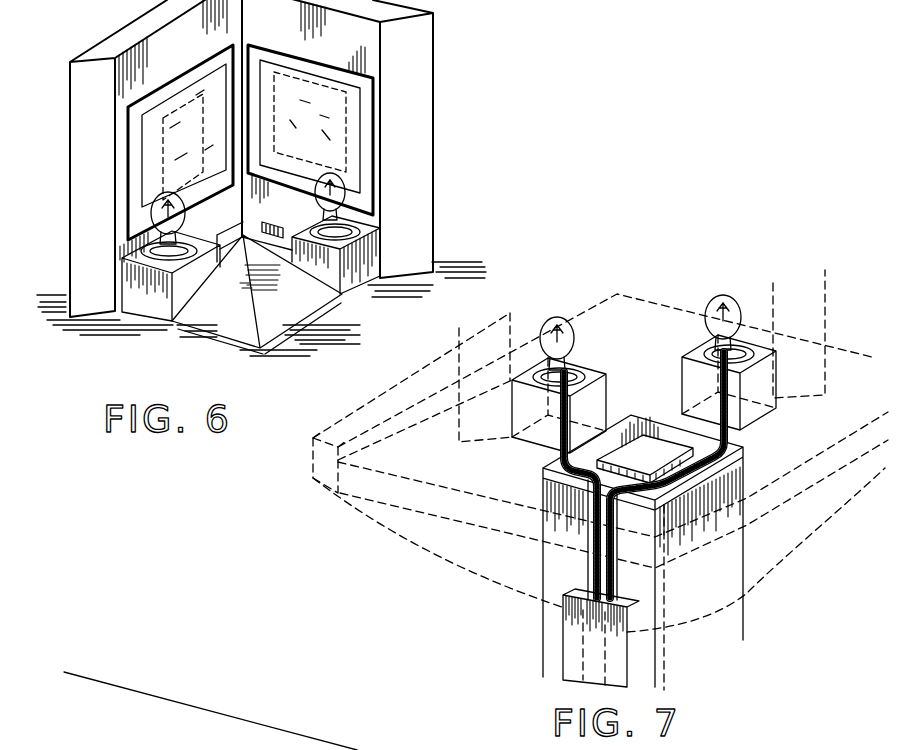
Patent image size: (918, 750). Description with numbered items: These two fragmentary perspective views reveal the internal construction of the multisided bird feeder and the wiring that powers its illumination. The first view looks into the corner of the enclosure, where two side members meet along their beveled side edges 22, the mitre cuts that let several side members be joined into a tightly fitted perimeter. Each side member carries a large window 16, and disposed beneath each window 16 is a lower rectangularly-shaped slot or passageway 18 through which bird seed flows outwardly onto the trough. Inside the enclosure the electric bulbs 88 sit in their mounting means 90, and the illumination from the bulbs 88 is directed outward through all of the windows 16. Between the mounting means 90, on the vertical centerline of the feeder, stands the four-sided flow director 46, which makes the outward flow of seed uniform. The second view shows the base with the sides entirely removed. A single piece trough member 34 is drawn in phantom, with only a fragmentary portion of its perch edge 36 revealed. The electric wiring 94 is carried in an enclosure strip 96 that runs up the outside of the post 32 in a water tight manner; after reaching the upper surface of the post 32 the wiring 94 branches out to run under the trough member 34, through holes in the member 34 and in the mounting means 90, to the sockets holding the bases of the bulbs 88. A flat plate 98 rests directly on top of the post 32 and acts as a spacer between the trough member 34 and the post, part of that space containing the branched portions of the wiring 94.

In FIG. 6, the bevel or mitre cut 22 is at (88, 84).
In FIG. 6, the window 16 is at (157, 143).
In FIG. 6, the lower rectangularly-shaped slot or passageway 18 is at (222, 228).
In FIG. 6, the electric bulb 88 is at (163, 223).
In FIG. 6, the mounting means 90 is at (151, 300).
In FIG. 7, the mounting means 90 is at (748, 400).
In FIG. 6, the flow director device 46 is at (225, 310).
In FIG. 7, the post 32 is at (725, 616).
In FIG. 7, the trough member 34 is at (407, 462).
In FIG. 7, the edge 36 is at (324, 476).
In FIG. 7, the electric wiring 94 is at (598, 561).
In FIG. 7, the enclosure strip 96 is at (565, 632).
In FIG. 7, the flat plate 98 is at (656, 445).